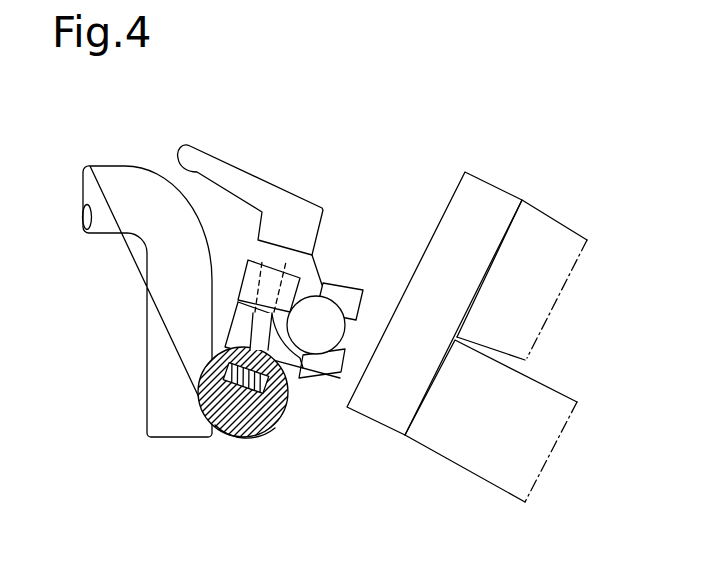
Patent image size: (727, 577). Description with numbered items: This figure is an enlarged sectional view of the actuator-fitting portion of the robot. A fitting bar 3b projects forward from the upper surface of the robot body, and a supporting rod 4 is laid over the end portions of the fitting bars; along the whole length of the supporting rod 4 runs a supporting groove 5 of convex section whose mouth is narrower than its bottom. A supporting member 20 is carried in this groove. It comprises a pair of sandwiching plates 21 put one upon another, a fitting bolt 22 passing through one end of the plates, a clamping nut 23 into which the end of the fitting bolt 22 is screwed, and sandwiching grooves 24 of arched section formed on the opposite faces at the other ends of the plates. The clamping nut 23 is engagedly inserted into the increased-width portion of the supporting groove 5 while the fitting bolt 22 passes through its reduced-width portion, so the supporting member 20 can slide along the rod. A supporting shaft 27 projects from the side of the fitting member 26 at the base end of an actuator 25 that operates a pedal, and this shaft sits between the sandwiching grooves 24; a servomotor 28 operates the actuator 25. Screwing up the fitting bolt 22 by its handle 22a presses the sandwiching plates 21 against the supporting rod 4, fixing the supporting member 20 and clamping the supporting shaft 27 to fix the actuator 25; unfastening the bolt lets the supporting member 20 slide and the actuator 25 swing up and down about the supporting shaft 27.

The fitting bar 3b is at (157, 273).
The supporting rod 4 is at (220, 412).
The supporting groove 5 is at (252, 440).
The supporting member 20 is at (240, 249).
The sandwiching plate 21 is at (347, 297).
The fitting bolt 22 is at (227, 350).
The handle 22a is at (203, 162).
The clamping nut 23 is at (227, 373).
The sandwiching groove 24 is at (318, 283).
The actuator 25 is at (497, 460).
The plate 26 is at (357, 355).
The supporting shaft 27 is at (303, 280).
The servomotor 28 is at (542, 232).